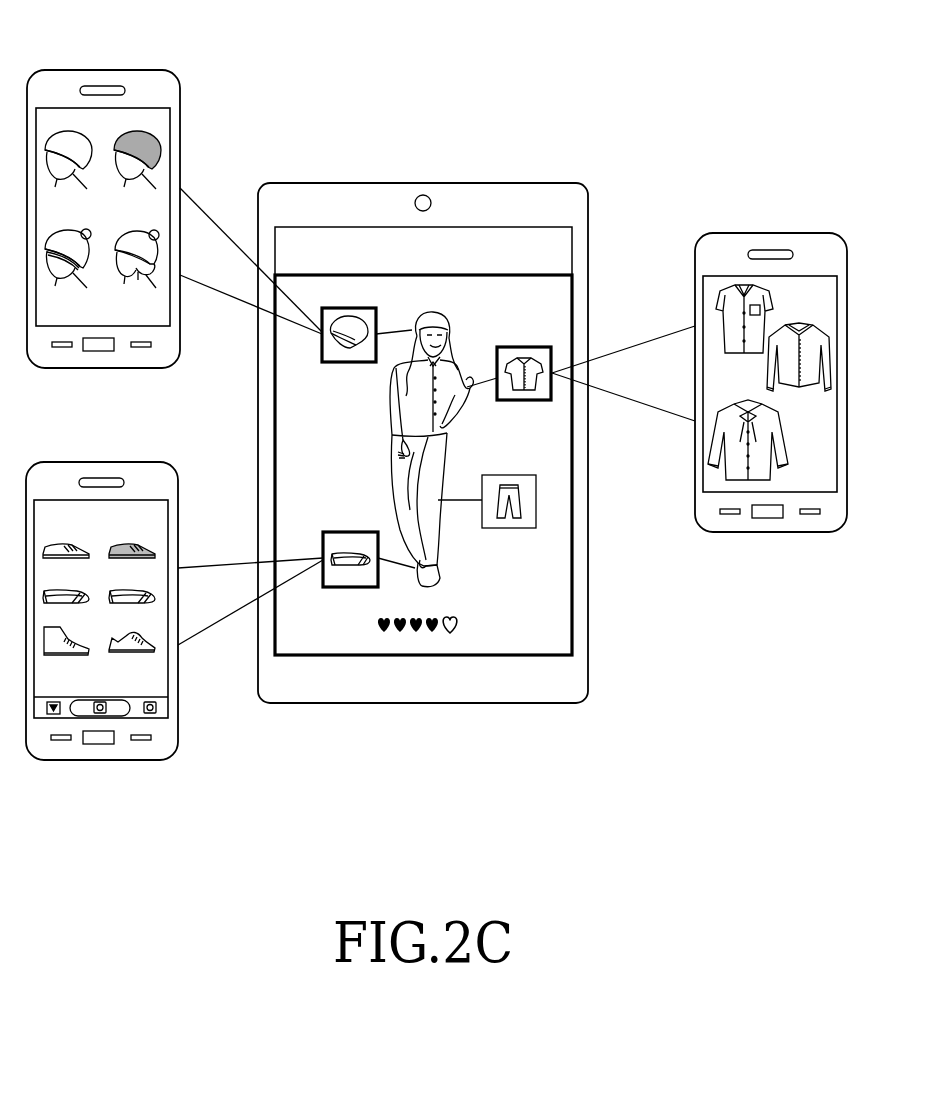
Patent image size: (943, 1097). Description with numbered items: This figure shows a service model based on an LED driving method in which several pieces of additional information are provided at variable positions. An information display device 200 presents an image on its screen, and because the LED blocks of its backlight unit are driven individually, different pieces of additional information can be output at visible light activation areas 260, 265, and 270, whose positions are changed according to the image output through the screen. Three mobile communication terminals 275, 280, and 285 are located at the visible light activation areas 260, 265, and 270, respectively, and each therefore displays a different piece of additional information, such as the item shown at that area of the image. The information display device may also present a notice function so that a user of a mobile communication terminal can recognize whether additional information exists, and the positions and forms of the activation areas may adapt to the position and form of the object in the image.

The electronic device 200 is at (421, 183).
The visible light activation area 260 is at (350, 365).
The visible light activation area 265 is at (522, 345).
The visible light activation area 270 is at (350, 530).
The mobile communication terminal 275 is at (100, 70).
The mobile communication terminal 280 is at (770, 233).
The mobile communication terminal 285 is at (100, 462).